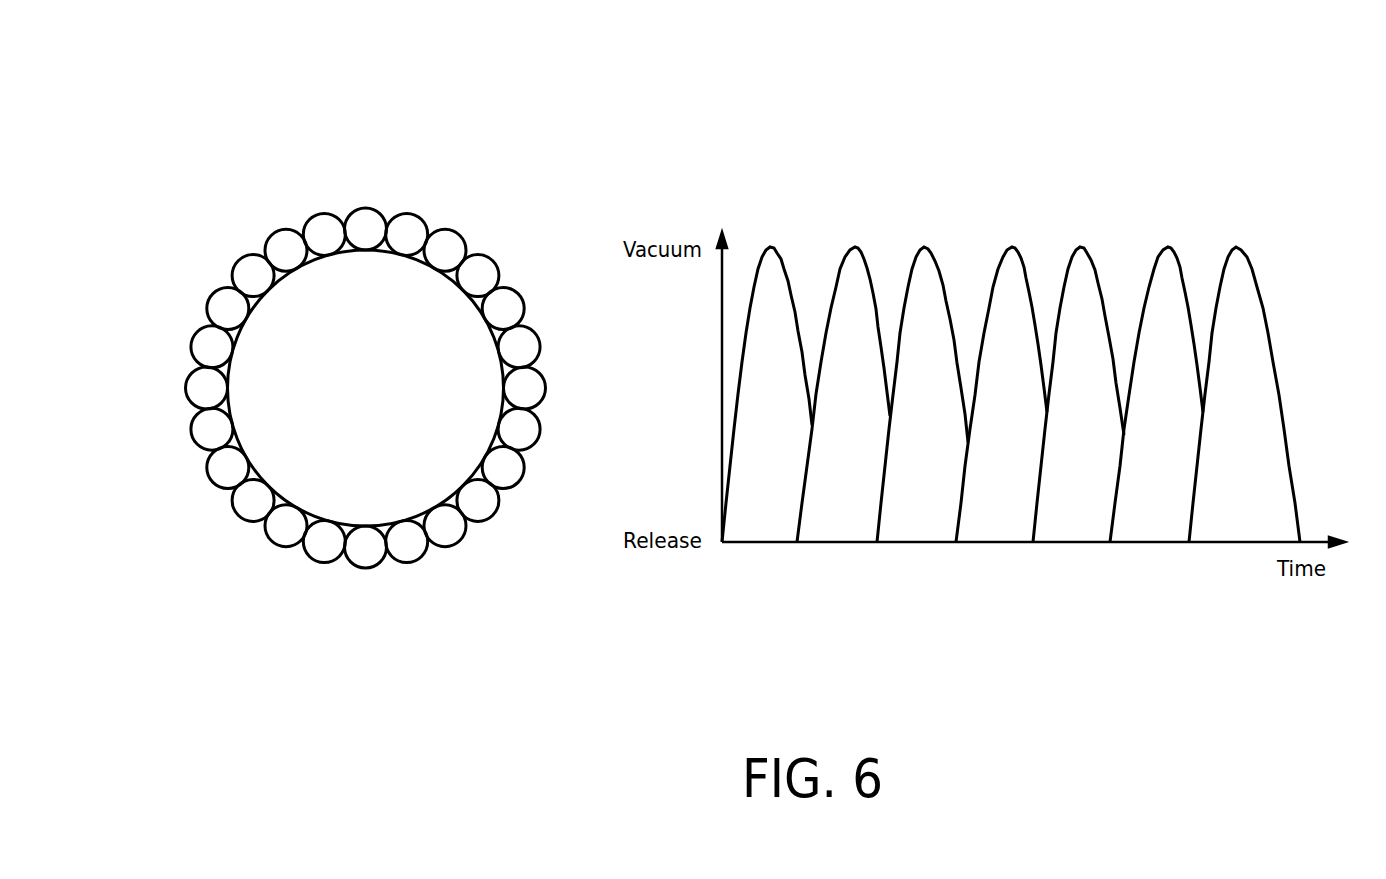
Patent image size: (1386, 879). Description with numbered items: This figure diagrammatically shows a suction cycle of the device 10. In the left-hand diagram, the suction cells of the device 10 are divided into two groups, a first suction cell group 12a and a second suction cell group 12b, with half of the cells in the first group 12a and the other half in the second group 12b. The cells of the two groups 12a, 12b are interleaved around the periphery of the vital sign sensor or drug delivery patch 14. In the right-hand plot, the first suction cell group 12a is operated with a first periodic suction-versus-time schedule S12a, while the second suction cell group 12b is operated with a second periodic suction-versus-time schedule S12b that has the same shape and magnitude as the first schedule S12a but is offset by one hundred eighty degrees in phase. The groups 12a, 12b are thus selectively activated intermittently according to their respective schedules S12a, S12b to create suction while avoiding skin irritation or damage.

The device 10 is at (222, 185).
The first suction cell group 12a is at (262, 239).
The second suction cell group 12b is at (300, 561).
The vital sign sensor or drug delivery patch 14 is at (377, 400).
The first periodic suction-versus-time schedule S12a is at (990, 291).
The second periodic suction-versus-time schedule S12b is at (1225, 289).